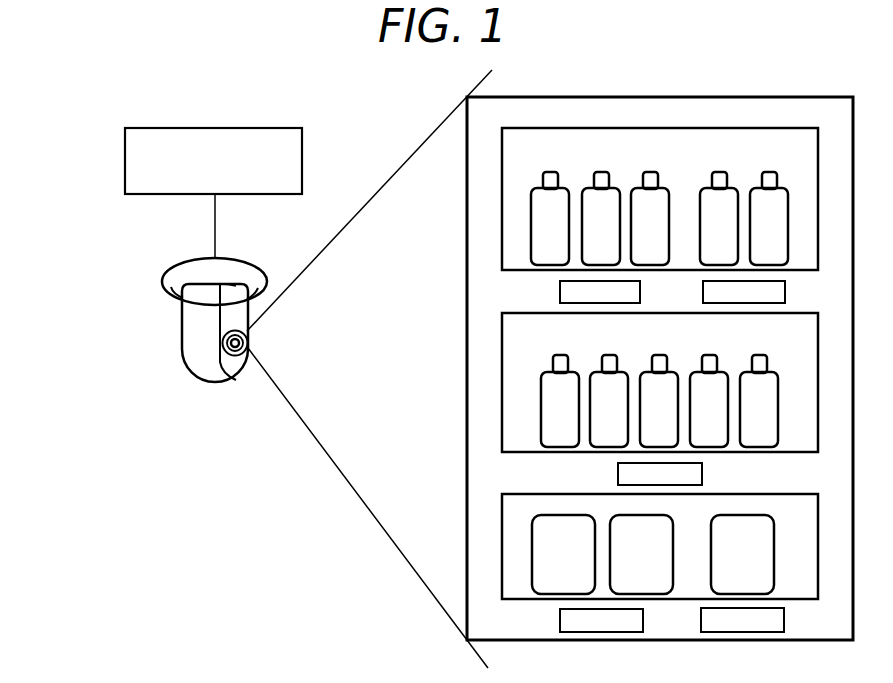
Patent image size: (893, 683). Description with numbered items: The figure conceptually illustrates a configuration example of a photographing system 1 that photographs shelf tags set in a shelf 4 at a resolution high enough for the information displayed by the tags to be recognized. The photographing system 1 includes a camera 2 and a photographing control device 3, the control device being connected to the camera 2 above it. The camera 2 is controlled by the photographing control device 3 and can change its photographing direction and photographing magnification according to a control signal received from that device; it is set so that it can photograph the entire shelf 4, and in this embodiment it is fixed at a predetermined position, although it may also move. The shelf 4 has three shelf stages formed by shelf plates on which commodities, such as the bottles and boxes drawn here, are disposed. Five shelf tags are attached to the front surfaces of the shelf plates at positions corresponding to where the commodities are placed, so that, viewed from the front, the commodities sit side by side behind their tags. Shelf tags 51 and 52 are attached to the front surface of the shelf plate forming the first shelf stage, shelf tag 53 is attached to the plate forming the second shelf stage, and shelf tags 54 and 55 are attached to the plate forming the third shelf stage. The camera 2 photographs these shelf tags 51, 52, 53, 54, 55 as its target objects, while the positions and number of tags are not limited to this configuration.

The photographing system 1 is at (72, 199).
The camera 2 is at (182, 322).
The photographing control device 3 is at (267, 128).
The shelf 4 is at (795, 97).
The shelf tag 51 is at (560, 292).
The shelf tag 52 is at (785, 292).
The shelf tag 53 is at (618, 474).
The shelf tag 54 is at (560, 622).
The shelf tag 55 is at (784, 621).